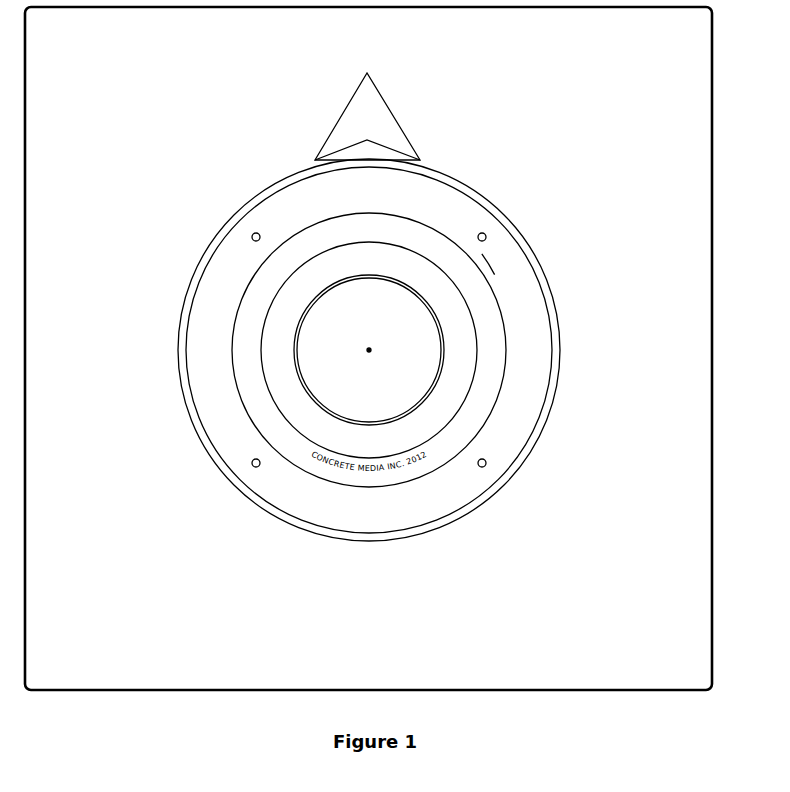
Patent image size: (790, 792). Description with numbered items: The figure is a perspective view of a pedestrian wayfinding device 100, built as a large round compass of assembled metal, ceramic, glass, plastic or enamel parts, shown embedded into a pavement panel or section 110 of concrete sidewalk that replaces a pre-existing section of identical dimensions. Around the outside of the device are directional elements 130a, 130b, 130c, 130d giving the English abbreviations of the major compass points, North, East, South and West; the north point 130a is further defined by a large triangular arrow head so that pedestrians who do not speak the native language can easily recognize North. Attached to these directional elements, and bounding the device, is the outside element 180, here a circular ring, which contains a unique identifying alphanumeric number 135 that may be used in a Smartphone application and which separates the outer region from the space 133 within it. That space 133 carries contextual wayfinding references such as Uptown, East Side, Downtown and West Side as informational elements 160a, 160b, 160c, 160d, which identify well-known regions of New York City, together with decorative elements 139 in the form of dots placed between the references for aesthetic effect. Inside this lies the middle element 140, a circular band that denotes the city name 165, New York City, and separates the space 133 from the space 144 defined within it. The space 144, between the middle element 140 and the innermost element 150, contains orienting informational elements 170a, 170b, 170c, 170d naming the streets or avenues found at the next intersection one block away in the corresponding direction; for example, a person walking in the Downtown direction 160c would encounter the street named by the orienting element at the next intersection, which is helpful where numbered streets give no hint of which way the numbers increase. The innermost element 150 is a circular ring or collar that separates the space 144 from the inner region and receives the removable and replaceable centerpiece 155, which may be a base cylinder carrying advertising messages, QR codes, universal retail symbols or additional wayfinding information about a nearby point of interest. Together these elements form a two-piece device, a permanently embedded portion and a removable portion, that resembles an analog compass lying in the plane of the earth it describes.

The pedestrian wayfinding device 100 is at (528, 238).
The pavement panel or section 110 is at (578, 70).
The north directional element 130a is at (388, 98).
The east directional element 130b is at (594, 364).
The south directional element 130c is at (381, 571).
The west directional element 130d is at (133, 359).
The space within the outside element 133 is at (236, 462).
The unique identifying alphanumeric number 135 is at (308, 528).
The decorative elements 139 is at (251, 236).
The middle element 140 is at (474, 287).
The space within the middle element 144 is at (288, 290).
The innermost element 150 is at (460, 257).
The centerpiece 155 is at (385, 297).
The informational element (Uptown) 160a is at (311, 197).
The informational element (East Side) 160b is at (526, 396).
The informational element (Downtown) 160c is at (299, 500).
The informational element (West Side) 160d is at (204, 394).
The city name 165 is at (293, 236).
The orienting informational element 170a is at (424, 290).
The orienting informational element 170b is at (471, 338).
The orienting informational element 170c is at (388, 451).
The orienting informational element 170d is at (274, 326).
The outside element 180 is at (490, 500).